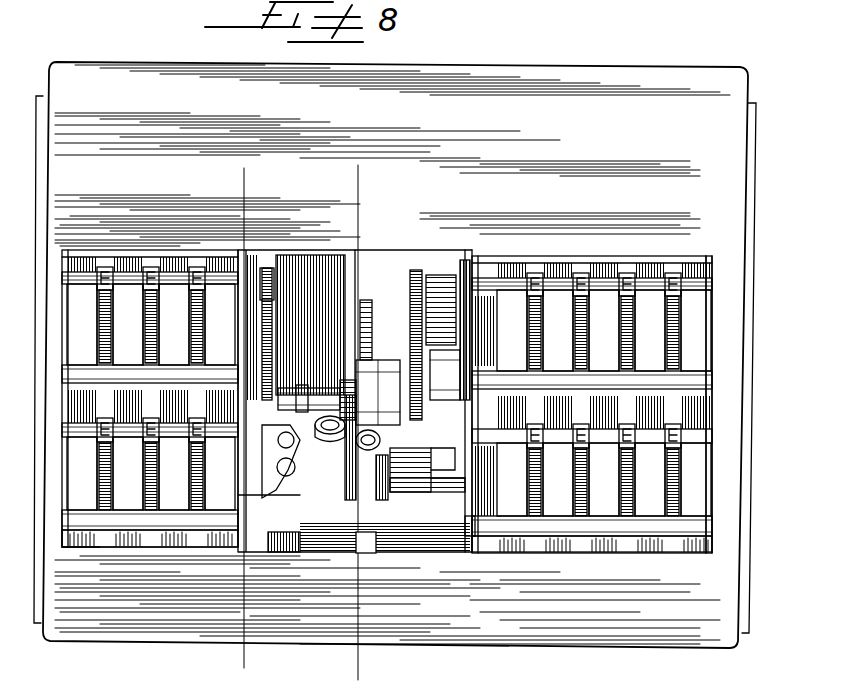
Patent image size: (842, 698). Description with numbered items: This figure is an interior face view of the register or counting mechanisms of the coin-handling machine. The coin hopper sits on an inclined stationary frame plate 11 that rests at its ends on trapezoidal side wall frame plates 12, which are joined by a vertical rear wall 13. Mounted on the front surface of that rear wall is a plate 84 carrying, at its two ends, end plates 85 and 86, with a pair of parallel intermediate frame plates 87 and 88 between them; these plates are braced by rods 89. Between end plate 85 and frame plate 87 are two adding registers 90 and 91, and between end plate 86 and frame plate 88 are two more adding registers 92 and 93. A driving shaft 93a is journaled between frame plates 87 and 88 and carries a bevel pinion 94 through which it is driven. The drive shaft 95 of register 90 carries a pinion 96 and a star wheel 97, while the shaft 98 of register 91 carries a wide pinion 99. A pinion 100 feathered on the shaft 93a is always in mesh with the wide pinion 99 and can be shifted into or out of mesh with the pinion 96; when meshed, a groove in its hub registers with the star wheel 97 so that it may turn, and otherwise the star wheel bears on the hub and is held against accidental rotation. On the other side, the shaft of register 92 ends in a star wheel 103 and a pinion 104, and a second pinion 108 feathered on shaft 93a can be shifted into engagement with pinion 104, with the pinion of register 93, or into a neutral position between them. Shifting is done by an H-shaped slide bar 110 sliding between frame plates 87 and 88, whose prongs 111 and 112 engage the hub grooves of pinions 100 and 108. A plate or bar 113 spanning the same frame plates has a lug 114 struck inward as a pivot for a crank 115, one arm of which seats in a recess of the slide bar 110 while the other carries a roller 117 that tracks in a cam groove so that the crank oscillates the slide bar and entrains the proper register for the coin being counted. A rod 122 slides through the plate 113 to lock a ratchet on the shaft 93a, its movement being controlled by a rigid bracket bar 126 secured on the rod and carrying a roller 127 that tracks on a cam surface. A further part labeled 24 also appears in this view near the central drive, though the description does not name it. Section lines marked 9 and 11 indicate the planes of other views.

The section line 9- 9 is at (262, 187).
The inclined stationary frame plate 11 is at (372, 187).
The trapezoidal side wall frame plates 12 is at (53, 146).
The vertical rear wall 13 is at (392, 354).
The shaft 24 is at (362, 365).
The plate 84 is at (589, 540).
The end plate 85 is at (744, 560).
The end plate 86 is at (58, 540).
The frame plate 87 is at (470, 270).
The frame plate 88 is at (242, 262).
The rods 89 is at (62, 374).
The adding register 90 is at (557, 300).
The adding register 91 is at (552, 500).
The adding register 92 is at (139, 250).
The adding register 93 is at (137, 494).
The shaft 93a is at (302, 397).
The bevel pinion 94 is at (348, 380).
The drive shaft 95 is at (466, 300).
The pinion 96 is at (400, 280).
The star wheel 97 is at (431, 300).
The shaft 98 is at (470, 536).
The wide pinion 99 is at (418, 481).
The pinion 100 is at (366, 398).
The star wheel 103 is at (283, 265).
The pinion 104 is at (267, 290).
The pinion 108 is at (273, 360).
The slide bar 110 is at (430, 415).
The prong 111 is at (452, 432).
The prong 112 is at (306, 392).
The plate or bar 113 is at (257, 537).
The lug 114 is at (274, 478).
The crank 115 is at (318, 452).
The roller 117 is at (335, 433).
The rod 122 is at (368, 548).
The bracket bar 126 is at (372, 484).
The roller 127 is at (370, 452).